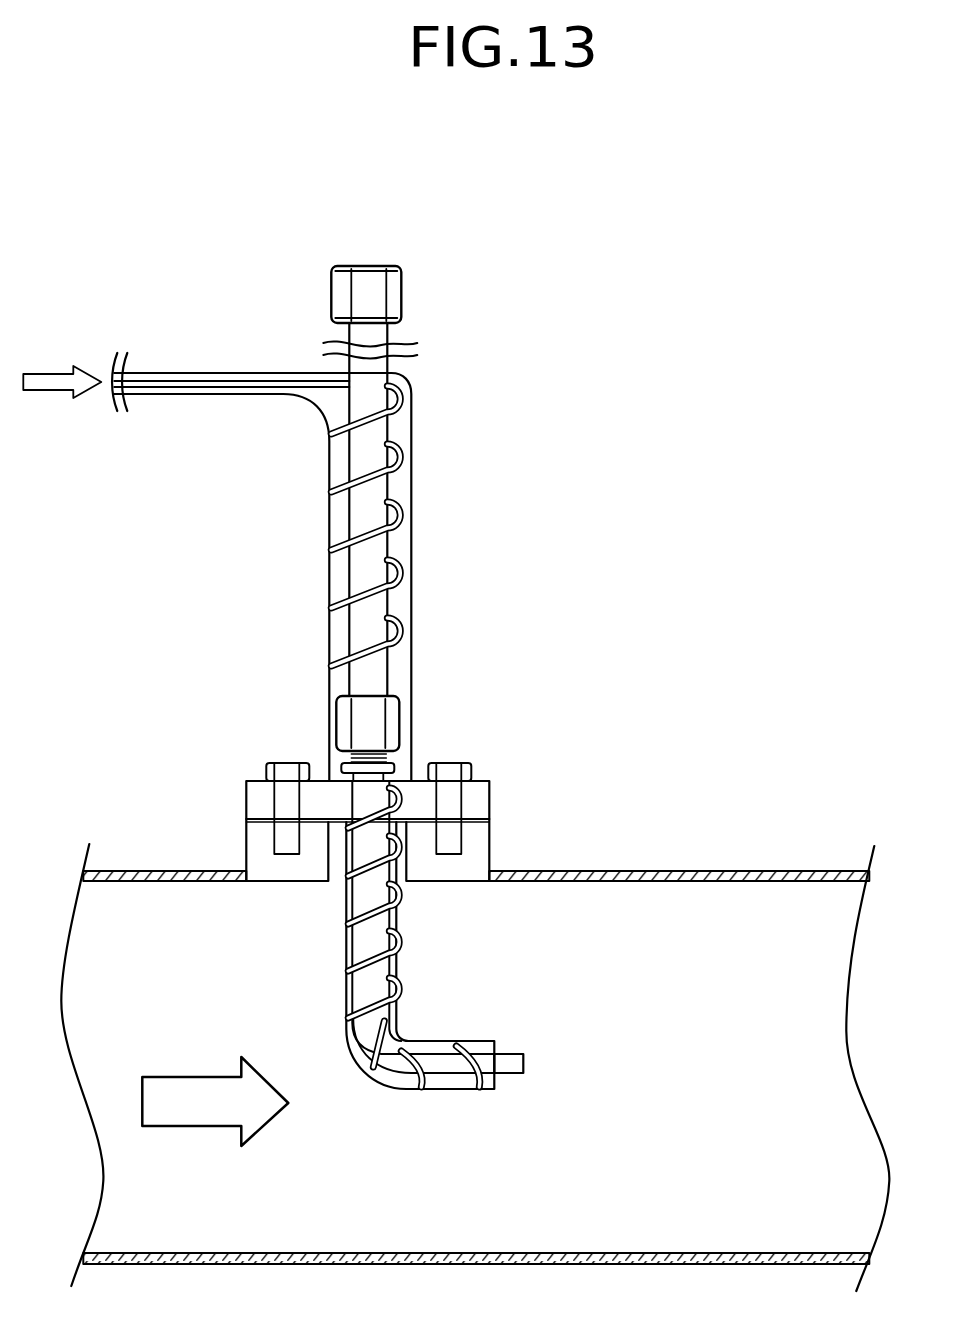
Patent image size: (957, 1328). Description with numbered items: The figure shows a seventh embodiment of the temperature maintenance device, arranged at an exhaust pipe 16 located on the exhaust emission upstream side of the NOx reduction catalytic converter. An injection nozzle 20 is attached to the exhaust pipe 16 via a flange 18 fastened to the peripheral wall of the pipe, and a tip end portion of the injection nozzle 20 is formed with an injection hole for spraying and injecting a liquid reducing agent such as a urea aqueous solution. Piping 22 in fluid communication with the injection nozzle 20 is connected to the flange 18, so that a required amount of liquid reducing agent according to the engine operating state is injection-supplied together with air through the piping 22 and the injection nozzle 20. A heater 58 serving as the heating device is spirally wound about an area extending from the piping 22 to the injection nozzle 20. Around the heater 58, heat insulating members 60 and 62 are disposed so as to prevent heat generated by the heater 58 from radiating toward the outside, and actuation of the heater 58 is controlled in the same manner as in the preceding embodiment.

The exhaust pipe 16 is at (738, 870).
The flange 18 is at (488, 797).
The injection nozzle 20 is at (510, 1050).
The piping 22 is at (386, 333).
The heater 58 is at (407, 440).
The heat insulating member 60 is at (408, 537).
The heat insulating member 62 is at (395, 957).